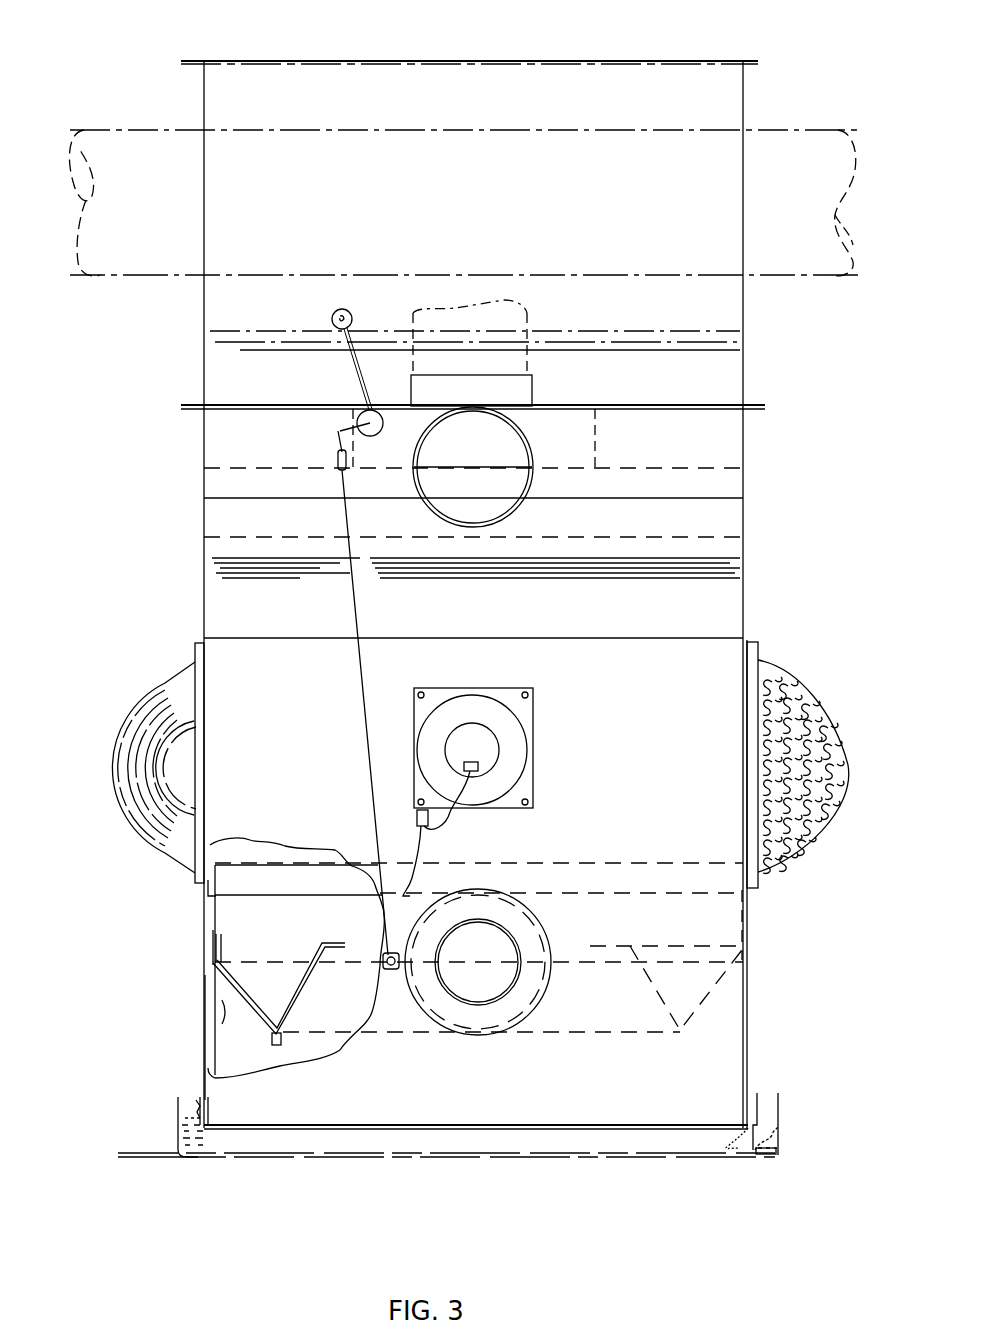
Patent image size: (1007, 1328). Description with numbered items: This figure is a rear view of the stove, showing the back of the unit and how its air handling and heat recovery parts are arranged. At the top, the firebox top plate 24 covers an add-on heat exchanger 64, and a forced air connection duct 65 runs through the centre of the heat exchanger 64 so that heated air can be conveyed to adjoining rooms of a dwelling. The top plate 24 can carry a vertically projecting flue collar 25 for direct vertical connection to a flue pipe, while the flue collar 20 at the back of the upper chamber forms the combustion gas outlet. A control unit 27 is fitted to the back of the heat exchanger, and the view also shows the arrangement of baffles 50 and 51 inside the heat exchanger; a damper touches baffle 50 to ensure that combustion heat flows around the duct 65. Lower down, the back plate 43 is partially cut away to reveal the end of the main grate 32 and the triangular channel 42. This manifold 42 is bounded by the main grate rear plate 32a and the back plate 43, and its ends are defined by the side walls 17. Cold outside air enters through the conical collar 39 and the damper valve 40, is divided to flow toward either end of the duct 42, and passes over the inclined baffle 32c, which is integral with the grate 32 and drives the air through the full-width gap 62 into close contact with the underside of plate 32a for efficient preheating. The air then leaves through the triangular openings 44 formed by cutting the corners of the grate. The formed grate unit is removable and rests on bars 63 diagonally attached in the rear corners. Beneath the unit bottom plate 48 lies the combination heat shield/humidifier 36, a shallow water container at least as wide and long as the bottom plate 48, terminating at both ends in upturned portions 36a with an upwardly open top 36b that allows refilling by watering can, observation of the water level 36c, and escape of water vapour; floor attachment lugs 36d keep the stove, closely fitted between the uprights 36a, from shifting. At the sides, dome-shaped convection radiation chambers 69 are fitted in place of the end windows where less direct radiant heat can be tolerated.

The top plate 24 is at (650, 61).
The forced air connection duct 65 is at (803, 278).
The add-on heat exchanger 64 is at (745, 364).
The control lever 27 is at (337, 312).
The flue collar 25 is at (532, 383).
The flue collar 20 is at (530, 440).
The baffle 50 is at (478, 466).
The baffle 51 is at (448, 474).
The convection radiation chamber 69 is at (137, 698).
The back plate 43 is at (648, 779).
The main grate 32 is at (238, 910).
The main grate rear plate 32a is at (210, 897).
The triangular channel 42 is at (282, 980).
The bars 63 is at (212, 936).
The gap 62 is at (350, 934).
The baffle 32c is at (297, 982).
The side wall 17 is at (212, 983).
The triangular openings 44 is at (224, 1004).
The combination heat shield/humidifier 36 is at (788, 1140).
The upturned portion 36a is at (178, 1117).
The upwardly open top 36b is at (189, 1102).
The water level 36c is at (200, 1098).
The floor attachment lugs 36d is at (780, 1157).
The conical collar 39 is at (540, 926).
The damper valve 40 is at (441, 1030).
The bottom plate 48 is at (400, 1122).